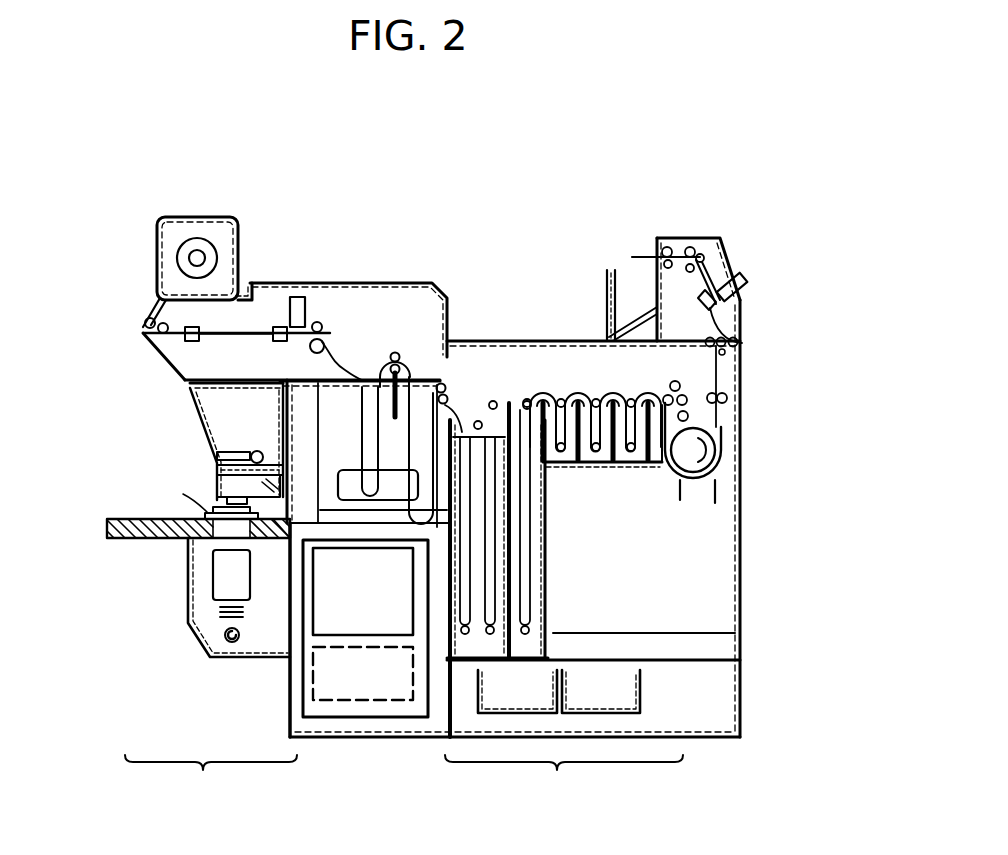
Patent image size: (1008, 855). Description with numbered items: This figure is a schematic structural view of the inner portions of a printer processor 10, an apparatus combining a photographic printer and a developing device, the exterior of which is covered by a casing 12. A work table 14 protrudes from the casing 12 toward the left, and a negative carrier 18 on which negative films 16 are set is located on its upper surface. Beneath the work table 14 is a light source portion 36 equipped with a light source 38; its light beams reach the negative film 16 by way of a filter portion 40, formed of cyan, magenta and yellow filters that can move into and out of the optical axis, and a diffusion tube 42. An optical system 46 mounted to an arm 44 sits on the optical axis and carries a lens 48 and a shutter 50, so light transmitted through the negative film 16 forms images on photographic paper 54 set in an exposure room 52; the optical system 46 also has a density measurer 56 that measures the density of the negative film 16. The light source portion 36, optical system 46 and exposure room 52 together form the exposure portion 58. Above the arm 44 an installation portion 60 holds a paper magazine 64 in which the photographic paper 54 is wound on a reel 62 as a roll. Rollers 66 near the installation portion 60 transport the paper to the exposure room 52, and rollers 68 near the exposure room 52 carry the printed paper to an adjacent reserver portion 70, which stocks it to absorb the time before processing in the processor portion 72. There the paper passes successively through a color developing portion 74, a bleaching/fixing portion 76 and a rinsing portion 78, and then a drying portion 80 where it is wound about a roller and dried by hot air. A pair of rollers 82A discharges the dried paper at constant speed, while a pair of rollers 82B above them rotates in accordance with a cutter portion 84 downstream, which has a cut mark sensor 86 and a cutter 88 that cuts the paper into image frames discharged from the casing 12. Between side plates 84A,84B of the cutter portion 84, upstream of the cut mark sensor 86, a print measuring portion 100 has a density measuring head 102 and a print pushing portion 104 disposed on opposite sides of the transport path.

The printer processor 10 is at (292, 216).
The casing 12 is at (500, 338).
The work table 14 is at (108, 510).
The negative film 16 is at (213, 507).
The negative carrier 18 is at (183, 494).
The light source portion 36 is at (190, 620).
The light source 38 is at (232, 643).
The filter portion 40 is at (212, 623).
The diffusion tube 42 is at (213, 568).
The arm 44 is at (178, 354).
The optical system 46 is at (190, 410).
The lens 48 is at (216, 473).
The shutter 50 is at (241, 453).
The exposure room 52 is at (215, 368).
The photographic paper 54 is at (258, 327).
The density measurer 56 is at (360, 379).
The exposure portion 58 is at (211, 783).
The installation portion 60 is at (176, 297).
The reel 62 is at (197, 252).
The paper magazine 64 is at (224, 218).
The rollers 66 is at (144, 333).
The rollers 68 is at (313, 322).
The reserver portion 70 is at (324, 453).
The processor portion 72 is at (592, 722).
The color developing portion 74 is at (470, 647).
The bleaching/fixing portion 76 is at (532, 641).
The rinsing portion 78 is at (630, 467).
The drying portion 80 is at (693, 485).
The pair of rollers 82A is at (727, 397).
The pair of rollers 82B is at (742, 353).
The cutter portion 84 is at (618, 251).
The side plates 84A,84B is at (718, 237).
The cut mark sensor 86 is at (709, 314).
The cutter 88 is at (685, 237).
The print measuring portion 100 is at (746, 268).
The density measuring head 102 is at (748, 283).
The print pushing portion 104 is at (740, 330).